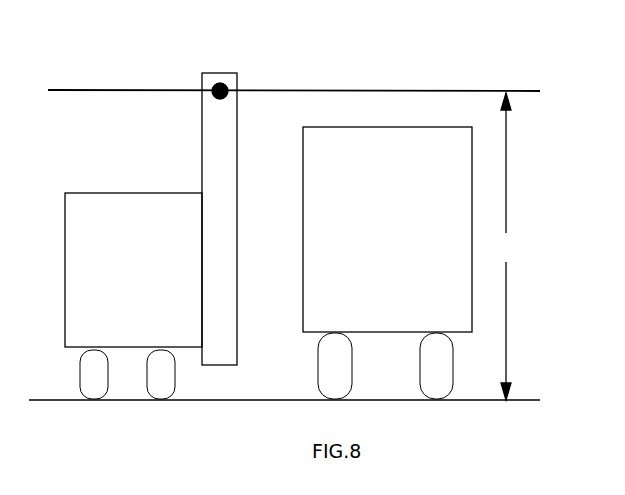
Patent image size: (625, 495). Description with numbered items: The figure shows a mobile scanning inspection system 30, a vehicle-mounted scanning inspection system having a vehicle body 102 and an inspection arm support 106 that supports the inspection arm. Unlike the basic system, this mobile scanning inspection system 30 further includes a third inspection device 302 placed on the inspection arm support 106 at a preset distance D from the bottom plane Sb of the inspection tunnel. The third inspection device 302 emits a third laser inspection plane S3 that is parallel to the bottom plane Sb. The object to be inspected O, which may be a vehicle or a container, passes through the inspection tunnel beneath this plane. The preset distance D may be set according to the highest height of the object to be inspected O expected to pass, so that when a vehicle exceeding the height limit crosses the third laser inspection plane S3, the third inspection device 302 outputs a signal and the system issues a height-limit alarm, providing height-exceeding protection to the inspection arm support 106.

The mobile scanning inspection system 30 is at (64, 55).
The third laser inspection plane S3 is at (172, 69).
The third inspection device 302 is at (226, 84).
The inspection arm support 106 is at (218, 126).
The vehicle body 102 is at (100, 192).
The object to be inspected O is at (438, 212).
The preset distance D is at (505, 246).
The bottom plane of the inspection tunnel Sb is at (520, 400).